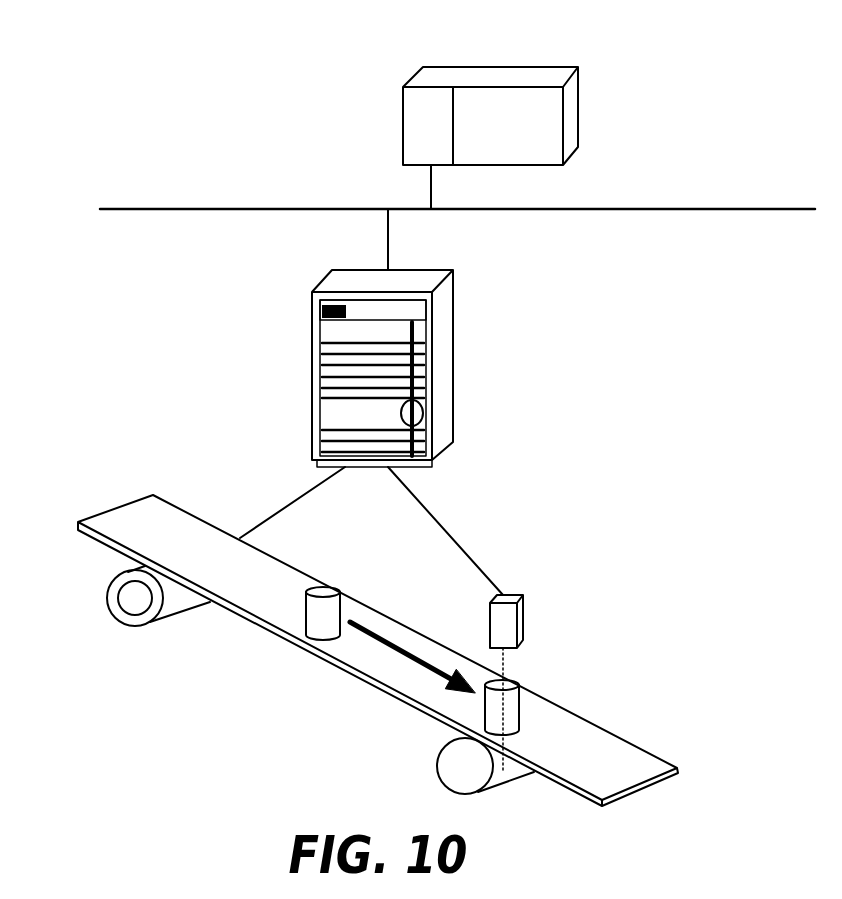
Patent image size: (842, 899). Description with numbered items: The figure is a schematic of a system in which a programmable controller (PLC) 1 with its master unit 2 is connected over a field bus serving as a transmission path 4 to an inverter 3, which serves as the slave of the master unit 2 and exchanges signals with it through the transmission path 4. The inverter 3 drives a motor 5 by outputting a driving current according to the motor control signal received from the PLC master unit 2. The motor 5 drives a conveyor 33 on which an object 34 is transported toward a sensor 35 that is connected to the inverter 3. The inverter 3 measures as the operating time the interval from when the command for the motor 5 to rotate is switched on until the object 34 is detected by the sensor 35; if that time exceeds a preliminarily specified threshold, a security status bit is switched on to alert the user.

The programmable controller (PLC) 1 is at (530, 70).
The master unit 2 is at (443, 70).
The inverter 3 is at (447, 360).
The transmission path 4 is at (698, 208).
The motor 5 is at (108, 600).
The conveyor 33 is at (607, 724).
The object 34 is at (310, 632).
The sensor 35 is at (522, 614).